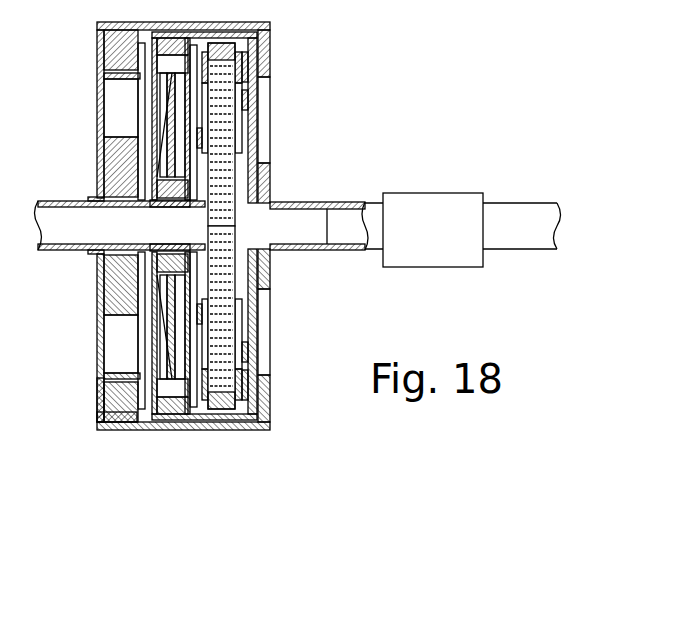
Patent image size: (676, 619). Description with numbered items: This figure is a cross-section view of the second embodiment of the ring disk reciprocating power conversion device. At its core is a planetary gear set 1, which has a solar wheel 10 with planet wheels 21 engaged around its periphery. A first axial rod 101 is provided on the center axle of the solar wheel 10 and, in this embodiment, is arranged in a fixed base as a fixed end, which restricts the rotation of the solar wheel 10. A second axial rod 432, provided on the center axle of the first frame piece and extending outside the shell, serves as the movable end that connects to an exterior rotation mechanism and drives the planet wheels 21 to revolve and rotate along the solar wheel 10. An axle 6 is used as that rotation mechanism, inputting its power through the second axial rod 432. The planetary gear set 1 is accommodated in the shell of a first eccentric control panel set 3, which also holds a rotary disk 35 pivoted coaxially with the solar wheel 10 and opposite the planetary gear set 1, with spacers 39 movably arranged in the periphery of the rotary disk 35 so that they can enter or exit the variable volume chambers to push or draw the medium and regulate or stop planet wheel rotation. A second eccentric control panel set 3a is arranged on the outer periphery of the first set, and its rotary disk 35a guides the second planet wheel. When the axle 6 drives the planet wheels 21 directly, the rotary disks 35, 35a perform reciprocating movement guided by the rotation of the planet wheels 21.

The planetary gear set 1 is at (237, 138).
The eccentric control panel set 3 is at (160, 425).
The second eccentric control panel set 3a is at (97, 405).
The axle 6 is at (516, 216).
The solar wheel 10 is at (224, 207).
The planet wheels 21 is at (223, 100).
The rotary disk 35 is at (145, 177).
The rotary disk of the second eccentric control panel 35a is at (120, 187).
The spacers 39 is at (172, 108).
The first axial rod 101 is at (87, 227).
The second axial rod 432 is at (340, 204).